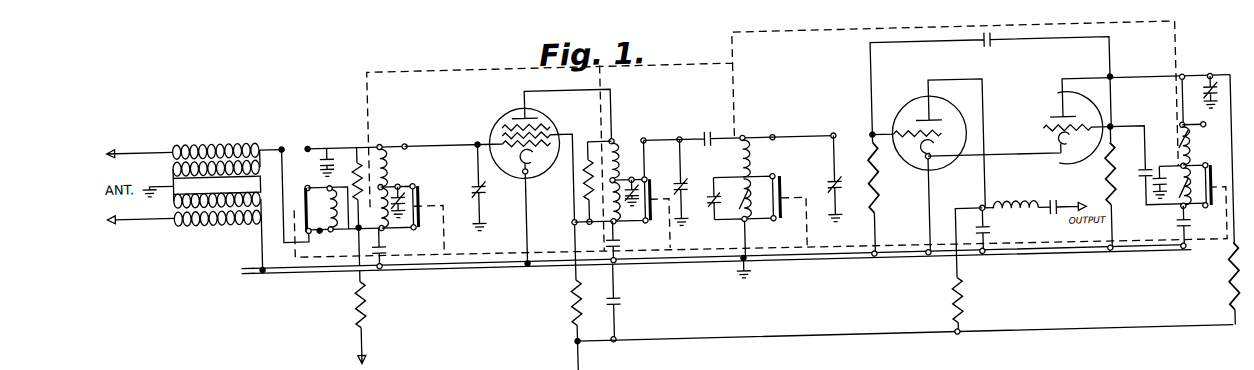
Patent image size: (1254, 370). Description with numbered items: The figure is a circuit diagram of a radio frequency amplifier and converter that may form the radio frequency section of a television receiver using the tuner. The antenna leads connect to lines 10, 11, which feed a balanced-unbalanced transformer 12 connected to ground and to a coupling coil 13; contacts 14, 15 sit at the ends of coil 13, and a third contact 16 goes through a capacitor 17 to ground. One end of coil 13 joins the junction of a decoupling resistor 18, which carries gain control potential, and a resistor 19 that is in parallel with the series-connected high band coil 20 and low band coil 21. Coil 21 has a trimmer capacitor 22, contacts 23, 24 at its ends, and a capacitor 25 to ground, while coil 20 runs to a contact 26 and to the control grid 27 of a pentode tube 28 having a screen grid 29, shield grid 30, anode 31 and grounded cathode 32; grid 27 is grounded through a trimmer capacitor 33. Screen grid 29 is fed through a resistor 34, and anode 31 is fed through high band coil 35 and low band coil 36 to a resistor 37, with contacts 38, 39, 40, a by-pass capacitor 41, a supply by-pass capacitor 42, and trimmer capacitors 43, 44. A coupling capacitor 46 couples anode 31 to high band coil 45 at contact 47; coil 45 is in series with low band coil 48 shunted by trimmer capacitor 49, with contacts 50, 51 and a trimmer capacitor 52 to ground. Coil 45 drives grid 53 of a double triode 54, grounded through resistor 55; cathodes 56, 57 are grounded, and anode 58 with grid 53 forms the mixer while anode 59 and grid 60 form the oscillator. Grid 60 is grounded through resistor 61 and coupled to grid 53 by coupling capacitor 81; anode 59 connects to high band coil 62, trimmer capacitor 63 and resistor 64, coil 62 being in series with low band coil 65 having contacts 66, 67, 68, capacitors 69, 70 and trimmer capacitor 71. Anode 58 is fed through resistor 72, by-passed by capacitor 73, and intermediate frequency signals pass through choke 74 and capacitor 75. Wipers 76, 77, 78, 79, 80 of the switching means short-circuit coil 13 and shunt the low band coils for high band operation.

The line 10 is at (125, 139).
The line 11 is at (128, 206).
The balanced-unbalanced transformer 12 is at (200, 213).
The coupling coil 13 is at (322, 223).
The contact 14 is at (307, 176).
The contact 15 is at (327, 200).
The third contact 16 is at (307, 136).
The capacitor 17 is at (328, 149).
The decoupling resistor 18 is at (363, 295).
The resistor 19 is at (358, 153).
The high band coil 20 is at (384, 150).
The low band coil 21 is at (385, 218).
The trimmer capacitor 22 is at (415, 180).
The contact 23 is at (403, 188).
The contact 24 is at (415, 221).
The capacitor 25 is at (383, 244).
The contact 26 is at (407, 137).
The control grid 27 is at (502, 137).
The pentode tube 28 is at (517, 104).
The screen grid 29 is at (572, 130).
The shield grid 30 is at (507, 129).
The anode 31 is at (508, 120).
The cathode 32 is at (524, 168).
The trimmer capacitor 33 is at (476, 186).
The resistor 34 is at (571, 293).
The high band coil 35 is at (617, 150).
The low band coil 36 is at (616, 220).
The resistor 37 is at (590, 152).
The contact 38 is at (647, 137).
The contact 39 is at (648, 178).
The contact 40 is at (645, 222).
The radio frequency by-pass capacitor 41 is at (608, 242).
The capacitor 42 is at (616, 300).
The trimmer capacitor 43 is at (633, 186).
The trimmer capacitor 44 is at (684, 189).
The high band coil 45 is at (740, 158).
The coupling capacitor 46 is at (707, 135).
The contact 47 is at (772, 137).
The low band coil 48 is at (748, 198).
The trimmer capacitor 49 is at (711, 205).
The contact 50 is at (774, 177).
The contact 51 is at (747, 222).
The trimmer capacitor 52 is at (838, 186).
The grid 53 is at (900, 137).
The double triode 54 is at (907, 170).
The resistor 55 is at (878, 205).
The cathode 56 is at (934, 156).
The cathode 57 is at (1062, 148).
The anode 58 is at (937, 118).
The anode 59 is at (1068, 103).
The grid 60 is at (1052, 126).
The resistor 61 is at (1114, 175).
The high band coil 62 is at (1180, 158).
The trimmer capacitor 63 is at (1208, 99).
The resistor 64 is at (1228, 297).
The low band coil 65 is at (1188, 200).
The contact 66 is at (1207, 138).
The contact 67 is at (1207, 176).
The contact 68 is at (1206, 220).
The capacitor 69 is at (1178, 236).
The capacitor 70 is at (1143, 188).
The trimmer capacitor 71 is at (1162, 186).
The resistor 72 is at (960, 297).
The capacitor 73 is at (988, 238).
The choke 74 is at (1015, 210).
The capacitor 75 is at (1054, 208).
The wiper 76 is at (305, 192).
The wiper 77 is at (419, 198).
The wiper 78 is at (652, 195).
The wiper 79 is at (782, 190).
The wiper 80 is at (1212, 190).
The coupling capacitor 81 is at (985, 43).